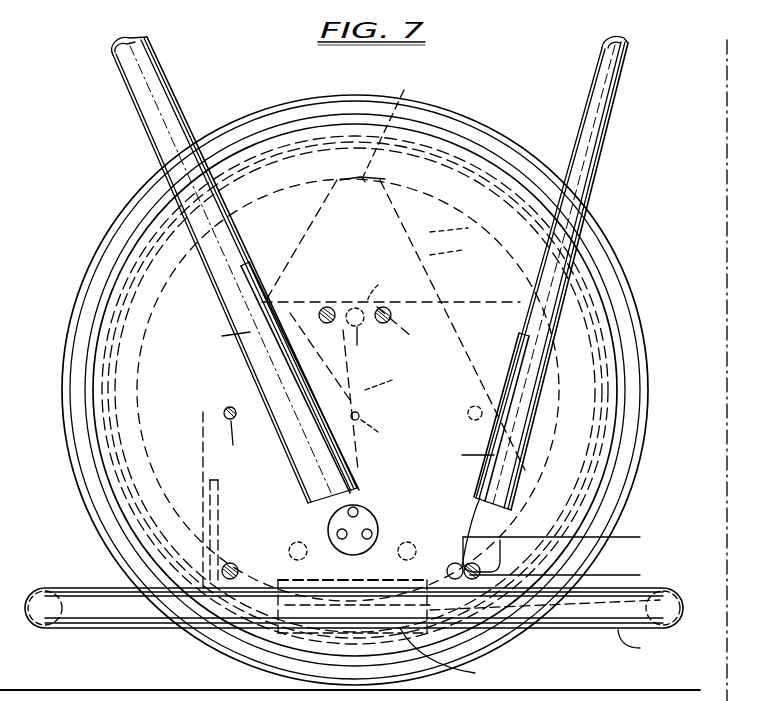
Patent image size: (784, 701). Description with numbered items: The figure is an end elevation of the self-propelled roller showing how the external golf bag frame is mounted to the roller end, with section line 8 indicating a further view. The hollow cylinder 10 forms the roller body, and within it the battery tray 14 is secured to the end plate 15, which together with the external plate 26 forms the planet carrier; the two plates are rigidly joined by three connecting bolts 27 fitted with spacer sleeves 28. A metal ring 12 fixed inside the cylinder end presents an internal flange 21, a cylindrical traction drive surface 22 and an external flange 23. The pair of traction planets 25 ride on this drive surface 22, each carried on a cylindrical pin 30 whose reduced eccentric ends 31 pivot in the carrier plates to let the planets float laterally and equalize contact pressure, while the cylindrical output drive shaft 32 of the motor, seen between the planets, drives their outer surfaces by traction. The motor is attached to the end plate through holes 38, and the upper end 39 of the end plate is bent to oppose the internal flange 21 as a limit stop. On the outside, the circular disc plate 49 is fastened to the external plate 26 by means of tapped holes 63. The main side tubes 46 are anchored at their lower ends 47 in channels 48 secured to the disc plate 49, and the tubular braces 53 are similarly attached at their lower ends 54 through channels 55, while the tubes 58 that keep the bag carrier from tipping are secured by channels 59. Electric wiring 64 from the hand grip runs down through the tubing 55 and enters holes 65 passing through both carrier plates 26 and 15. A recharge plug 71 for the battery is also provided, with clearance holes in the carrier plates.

The section line 8 is at (730, 75).
The hollow cylinder 10 is at (522, 163).
The outer rim 12 is at (638, 292).
The tray 14 is at (190, 635).
The end plate 15 is at (452, 251).
The internal flange 21 is at (444, 231).
The cylindrical traction drive surface 22 is at (393, 314).
The external flange 23 is at (622, 357).
The traction planets 25 is at (182, 300).
The external plate 26 is at (386, 282).
The connecting bolts 27 is at (407, 545).
The spacer sleeves 28 is at (350, 306).
The cylindrical pin 30 is at (224, 409).
The reduced eccentric ends 31 is at (237, 446).
The cylindrical output drive shaft 32 is at (380, 429).
The holes 38 is at (394, 379).
The upper end 39 is at (394, 120).
The main side tubes 46 is at (165, 132).
The lower end 47 is at (252, 260).
The channel 48 is at (217, 337).
The circular disc plate 49 is at (470, 165).
The tubular braces 53 is at (590, 163).
The lower ends 54 is at (530, 362).
The channels 55 is at (462, 455).
The tubes 58 is at (643, 645).
The channels 59 is at (456, 658).
The tapped holes 63 is at (325, 308).
The electric wiring 64 is at (567, 549).
The holes 65 is at (449, 538).
The recharge plug 71 is at (353, 545).